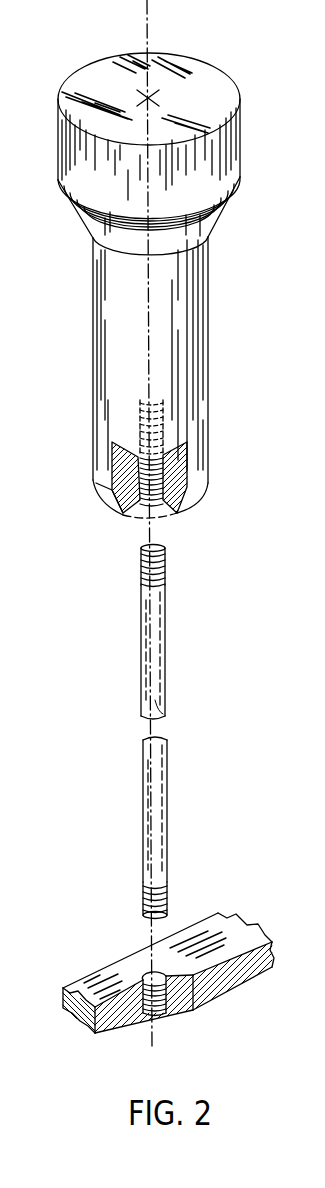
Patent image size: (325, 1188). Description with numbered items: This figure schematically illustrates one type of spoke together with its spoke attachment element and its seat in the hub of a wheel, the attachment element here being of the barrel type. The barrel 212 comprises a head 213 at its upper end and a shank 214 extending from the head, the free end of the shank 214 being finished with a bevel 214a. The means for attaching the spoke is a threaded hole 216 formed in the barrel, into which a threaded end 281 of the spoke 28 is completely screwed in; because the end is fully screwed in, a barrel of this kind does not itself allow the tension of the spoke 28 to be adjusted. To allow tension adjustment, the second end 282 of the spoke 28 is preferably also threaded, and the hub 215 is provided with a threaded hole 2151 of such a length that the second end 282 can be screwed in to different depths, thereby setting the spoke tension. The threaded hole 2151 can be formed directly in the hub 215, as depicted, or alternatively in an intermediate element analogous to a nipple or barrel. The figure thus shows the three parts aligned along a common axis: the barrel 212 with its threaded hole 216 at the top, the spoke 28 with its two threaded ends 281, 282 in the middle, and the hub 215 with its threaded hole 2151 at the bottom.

The barrel 212 is at (236, 280).
The head 213 is at (232, 139).
The shank 214 is at (90, 361).
The bevel 214a is at (195, 490).
The threaded hole 216 is at (162, 471).
The spoke 28 is at (168, 748).
The threaded end 281 is at (141, 569).
The second end 282 is at (142, 891).
The hub 215 is at (197, 930).
The threaded hole 2151 is at (178, 1010).